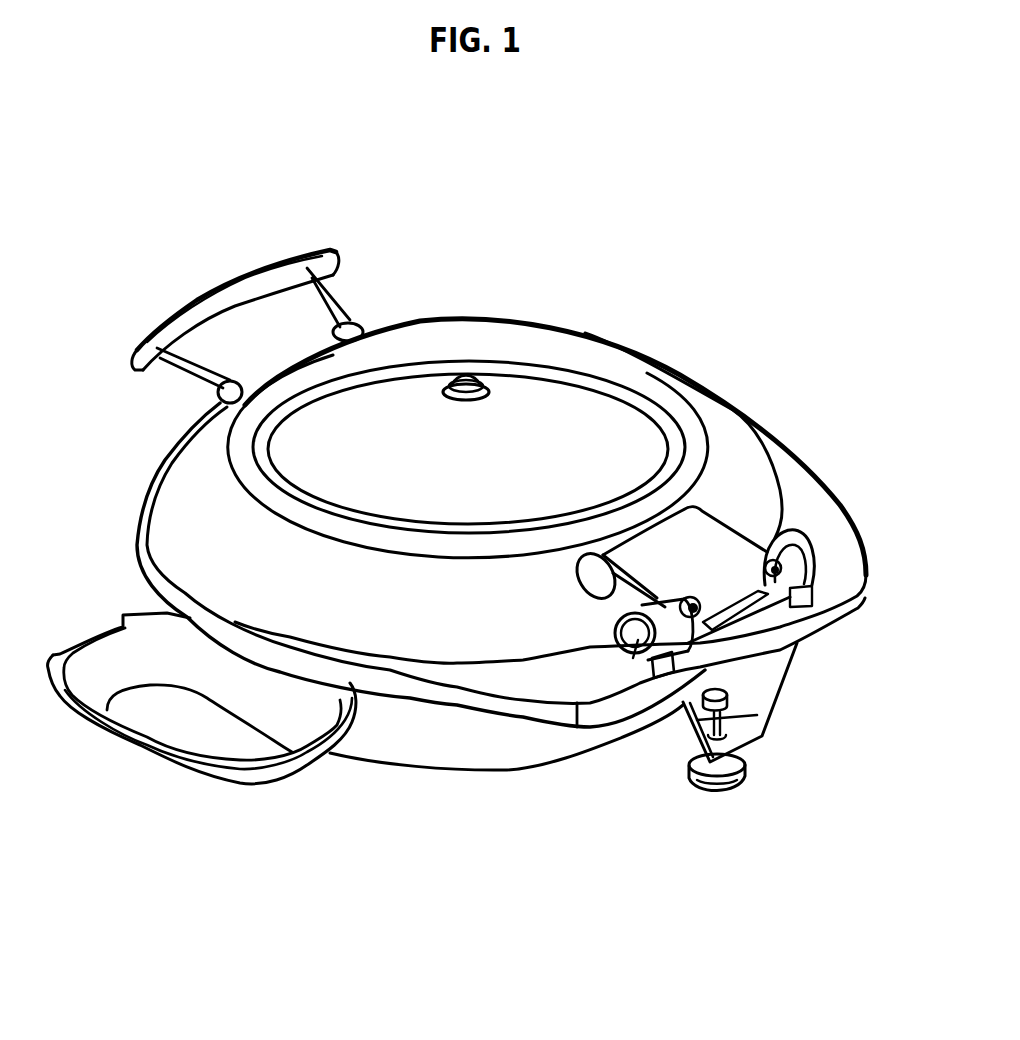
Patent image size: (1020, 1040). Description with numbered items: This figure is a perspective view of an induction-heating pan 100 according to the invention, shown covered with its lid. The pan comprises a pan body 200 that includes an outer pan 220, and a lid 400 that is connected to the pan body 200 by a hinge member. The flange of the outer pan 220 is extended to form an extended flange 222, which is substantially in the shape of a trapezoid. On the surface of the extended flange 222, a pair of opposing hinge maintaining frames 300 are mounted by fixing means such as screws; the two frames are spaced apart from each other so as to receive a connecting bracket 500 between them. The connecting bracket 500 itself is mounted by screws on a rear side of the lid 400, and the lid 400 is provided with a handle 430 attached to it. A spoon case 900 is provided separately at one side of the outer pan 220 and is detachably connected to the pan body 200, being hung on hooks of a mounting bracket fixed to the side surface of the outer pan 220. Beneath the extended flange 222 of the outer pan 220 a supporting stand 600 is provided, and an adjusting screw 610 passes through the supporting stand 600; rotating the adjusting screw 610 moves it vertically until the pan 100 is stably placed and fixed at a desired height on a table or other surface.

The induction-heating pan 100 is at (572, 307).
The pan body 200 is at (507, 783).
The outer pan 220 is at (420, 753).
The extended flange 222 is at (577, 688).
The hinge maintaining frame 300 is at (636, 642).
The lid 400 is at (203, 490).
The handle 430 is at (272, 285).
The connecting bracket 500 is at (705, 543).
The supporting stand 600 is at (783, 700).
The adjusting screw 610 is at (750, 717).
The spoon case 900 is at (183, 727).